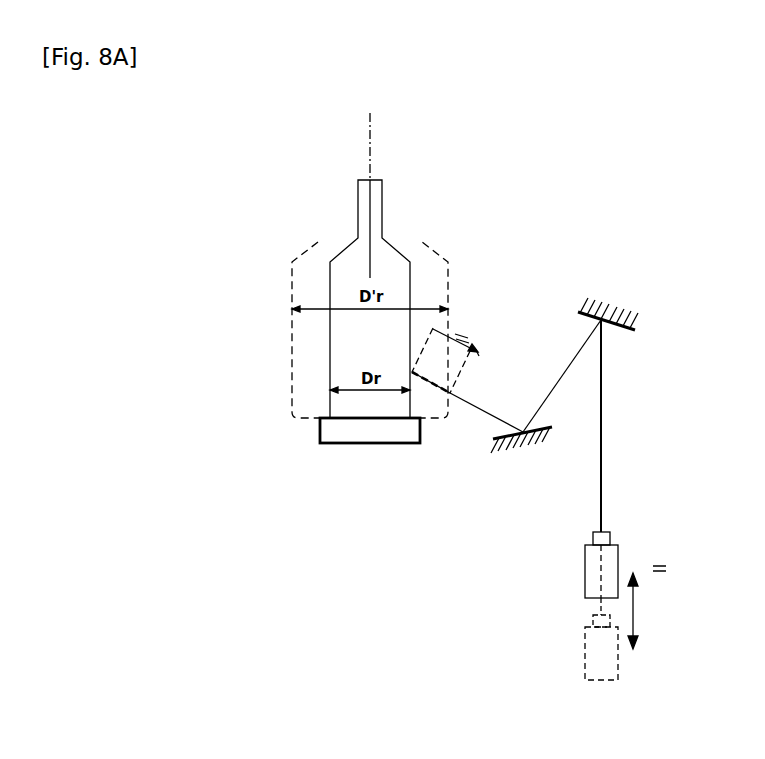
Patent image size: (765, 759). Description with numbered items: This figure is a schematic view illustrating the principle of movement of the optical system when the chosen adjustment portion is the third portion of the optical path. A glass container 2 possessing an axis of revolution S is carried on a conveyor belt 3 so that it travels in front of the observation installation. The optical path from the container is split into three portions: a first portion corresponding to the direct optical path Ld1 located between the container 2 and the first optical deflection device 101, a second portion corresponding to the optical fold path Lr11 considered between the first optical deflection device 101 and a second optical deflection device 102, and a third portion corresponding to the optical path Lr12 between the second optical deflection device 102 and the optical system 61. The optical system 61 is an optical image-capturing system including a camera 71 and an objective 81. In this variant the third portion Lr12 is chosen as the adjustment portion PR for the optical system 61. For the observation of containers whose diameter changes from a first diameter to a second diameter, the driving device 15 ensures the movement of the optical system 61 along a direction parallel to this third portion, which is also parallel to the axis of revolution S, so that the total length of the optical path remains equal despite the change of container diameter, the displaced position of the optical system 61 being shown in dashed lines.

The axis of revolution S is at (371, 119).
The glass container 2 is at (382, 223).
The conveyor belt 3 is at (357, 432).
The direct optical path Ld1 is at (495, 416).
The first optical deflection device 101 is at (505, 435).
The optical fold path Lr11 is at (552, 391).
The second optical deflection device 102 is at (581, 320).
The optical path Lr12 is at (602, 398).
The adjustment portion PR is at (602, 438).
The objective 81 is at (611, 534).
The camera 71 is at (589, 555).
The optical system 61 is at (584, 580).
The driving device 15 is at (636, 611).